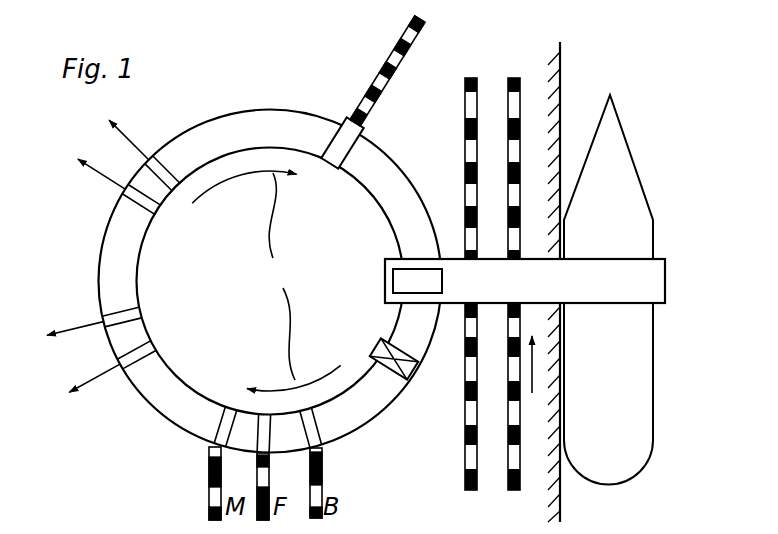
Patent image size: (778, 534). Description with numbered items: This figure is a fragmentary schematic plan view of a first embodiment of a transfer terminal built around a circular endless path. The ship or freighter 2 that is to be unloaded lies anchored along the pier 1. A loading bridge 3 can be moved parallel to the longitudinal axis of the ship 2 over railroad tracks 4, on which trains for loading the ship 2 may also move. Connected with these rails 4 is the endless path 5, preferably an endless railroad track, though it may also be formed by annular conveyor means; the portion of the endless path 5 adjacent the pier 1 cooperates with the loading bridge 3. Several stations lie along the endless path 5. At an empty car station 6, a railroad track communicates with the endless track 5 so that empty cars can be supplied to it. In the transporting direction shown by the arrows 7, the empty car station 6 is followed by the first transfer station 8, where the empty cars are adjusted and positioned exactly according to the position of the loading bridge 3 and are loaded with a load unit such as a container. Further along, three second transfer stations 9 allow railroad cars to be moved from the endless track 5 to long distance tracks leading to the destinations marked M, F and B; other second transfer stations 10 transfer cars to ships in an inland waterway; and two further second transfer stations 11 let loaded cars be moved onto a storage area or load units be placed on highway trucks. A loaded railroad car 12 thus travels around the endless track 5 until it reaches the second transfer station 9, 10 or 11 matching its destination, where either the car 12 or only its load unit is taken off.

The pier 1 is at (560, 60).
The ship 2 is at (655, 225).
The loading bridge 3 is at (490, 283).
The railroad tracks 4 is at (470, 438).
The endless path 5 is at (411, 184).
The empty car station 6 is at (341, 119).
The arrows 7 is at (266, 281).
The first transfer station 8 is at (437, 256).
The second transfer stations 9 is at (223, 451).
The second transfer stations 10 is at (102, 323).
The second transfer stations 11 is at (145, 157).
The railroad car 12 is at (410, 378).